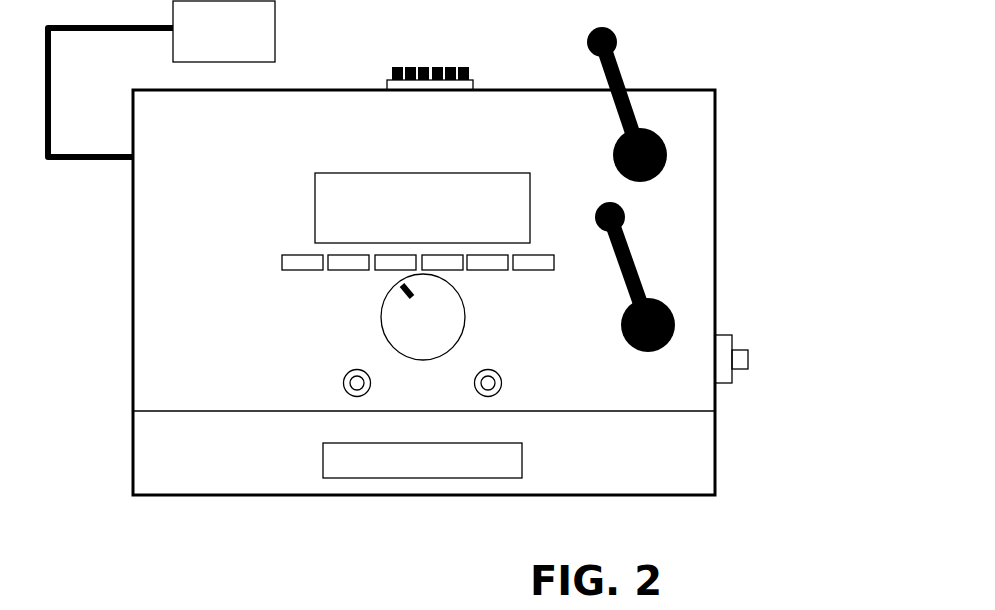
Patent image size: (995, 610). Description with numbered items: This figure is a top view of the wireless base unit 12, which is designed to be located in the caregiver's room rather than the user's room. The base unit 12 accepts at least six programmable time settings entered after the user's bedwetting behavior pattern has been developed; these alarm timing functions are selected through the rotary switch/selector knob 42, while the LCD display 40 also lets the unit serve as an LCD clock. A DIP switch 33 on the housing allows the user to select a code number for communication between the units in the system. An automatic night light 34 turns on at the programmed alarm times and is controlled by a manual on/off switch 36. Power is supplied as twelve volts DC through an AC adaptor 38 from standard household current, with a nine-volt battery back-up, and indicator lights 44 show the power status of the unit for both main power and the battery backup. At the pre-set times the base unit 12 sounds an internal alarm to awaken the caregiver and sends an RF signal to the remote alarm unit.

The base unit 12 is at (738, 240).
The DIP switch 33 is at (462, 67).
The automatic night light 34 is at (522, 472).
The manual on/off switch 36 is at (723, 385).
The AC adaptor 38 is at (275, 3).
The LCD display 40 is at (402, 173).
The rotary switch/selector knob 42 is at (462, 298).
The indicator lights 44 is at (343, 383).